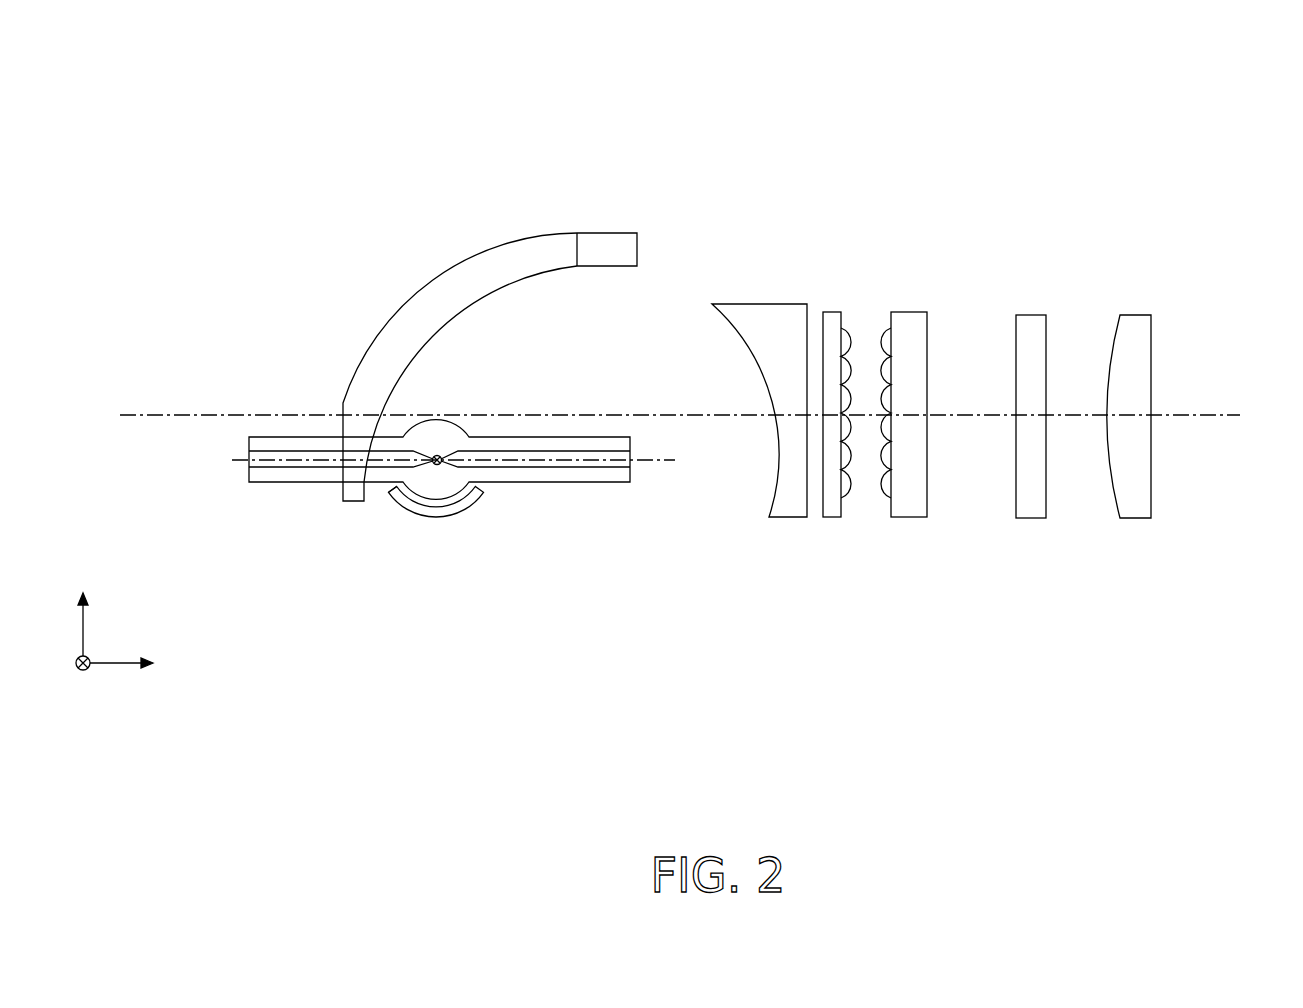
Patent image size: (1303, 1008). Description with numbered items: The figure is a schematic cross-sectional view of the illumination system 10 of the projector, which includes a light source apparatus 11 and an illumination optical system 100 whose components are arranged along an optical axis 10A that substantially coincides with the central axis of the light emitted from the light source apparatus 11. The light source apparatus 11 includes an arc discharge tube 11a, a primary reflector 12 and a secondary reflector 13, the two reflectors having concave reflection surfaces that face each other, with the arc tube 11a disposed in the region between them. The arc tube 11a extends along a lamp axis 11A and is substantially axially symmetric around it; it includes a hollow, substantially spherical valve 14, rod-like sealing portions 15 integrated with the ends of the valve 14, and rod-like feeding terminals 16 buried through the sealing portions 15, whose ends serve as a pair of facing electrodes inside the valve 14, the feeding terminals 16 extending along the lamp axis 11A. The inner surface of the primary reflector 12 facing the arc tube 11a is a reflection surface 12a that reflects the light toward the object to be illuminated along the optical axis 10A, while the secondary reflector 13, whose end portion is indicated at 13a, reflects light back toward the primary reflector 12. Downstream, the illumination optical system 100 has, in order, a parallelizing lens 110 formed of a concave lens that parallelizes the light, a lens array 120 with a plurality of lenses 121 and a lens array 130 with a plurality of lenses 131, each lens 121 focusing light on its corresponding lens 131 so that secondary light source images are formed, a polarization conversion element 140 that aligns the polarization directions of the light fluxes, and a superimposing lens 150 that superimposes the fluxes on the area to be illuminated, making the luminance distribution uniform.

The illumination system 10 is at (213, 174).
The optical axis 10A is at (707, 414).
The light source apparatus 11 is at (433, 236).
The lamp axis 11A is at (480, 459).
The arc discharge tube 11a is at (505, 502).
The primary reflector 12 is at (502, 257).
The reflection surface 12a is at (576, 274).
The secondary reflector 13 is at (435, 514).
The reflector end portion 13a is at (397, 503).
The valve 14 is at (441, 425).
The sealing portions 15 is at (265, 463).
The feeding terminals 16 is at (555, 463).
The illumination optical system 100 is at (726, 210).
The parallelizing lens 110 is at (760, 312).
The lens array 120 is at (832, 401).
The lenses 121 is at (848, 494).
The lens array 130 is at (900, 401).
The lenses 131 is at (885, 494).
The polarization conversion element 140 is at (1032, 318).
The superimposing lens 150 is at (1137, 318).